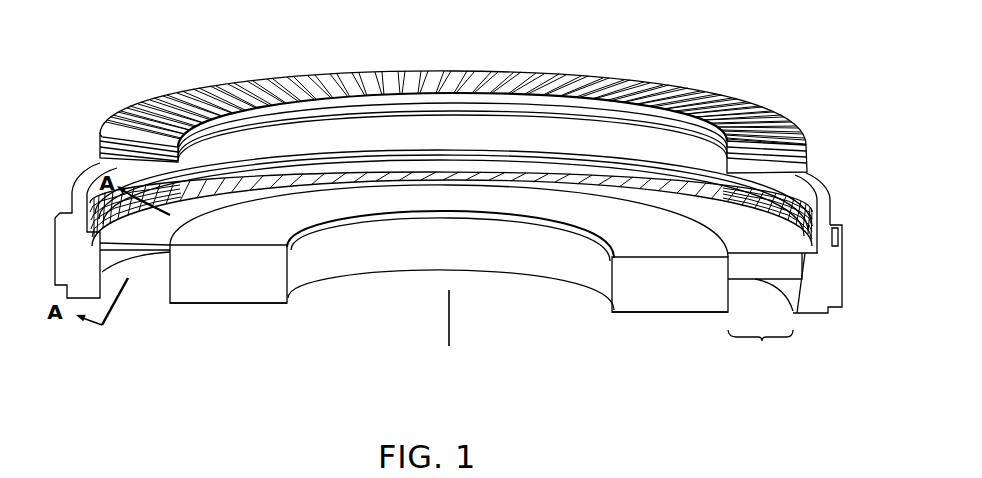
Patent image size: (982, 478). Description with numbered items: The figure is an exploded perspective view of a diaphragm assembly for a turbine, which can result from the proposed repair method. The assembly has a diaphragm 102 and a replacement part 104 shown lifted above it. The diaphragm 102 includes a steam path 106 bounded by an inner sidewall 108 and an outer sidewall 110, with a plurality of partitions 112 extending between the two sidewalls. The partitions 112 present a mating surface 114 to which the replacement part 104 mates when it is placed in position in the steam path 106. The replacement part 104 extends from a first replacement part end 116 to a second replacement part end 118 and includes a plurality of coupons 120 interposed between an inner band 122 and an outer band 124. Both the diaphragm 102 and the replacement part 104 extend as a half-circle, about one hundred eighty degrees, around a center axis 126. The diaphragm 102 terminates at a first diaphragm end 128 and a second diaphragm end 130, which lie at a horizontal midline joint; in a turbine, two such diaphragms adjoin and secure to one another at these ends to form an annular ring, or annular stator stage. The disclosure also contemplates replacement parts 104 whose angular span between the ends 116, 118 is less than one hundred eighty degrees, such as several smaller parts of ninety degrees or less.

The diaphragm 102 is at (515, 268).
The replacement part 104 is at (451, 103).
The steam path 106 is at (785, 294).
The inner sidewall 108 is at (451, 247).
The outer sidewall 110 is at (440, 256).
The partitions 112 is at (142, 262).
The mating surface 114 is at (158, 257).
The first replacement part end 116 is at (82, 133).
The second replacement part end 118 is at (819, 132).
The coupons 120 is at (147, 101).
The inner band 122 is at (234, 117).
The outer band 124 is at (156, 88).
The center axis 126 is at (447, 337).
The first diaphragm end 128 is at (235, 340).
The second diaphragm end 130 is at (677, 345).